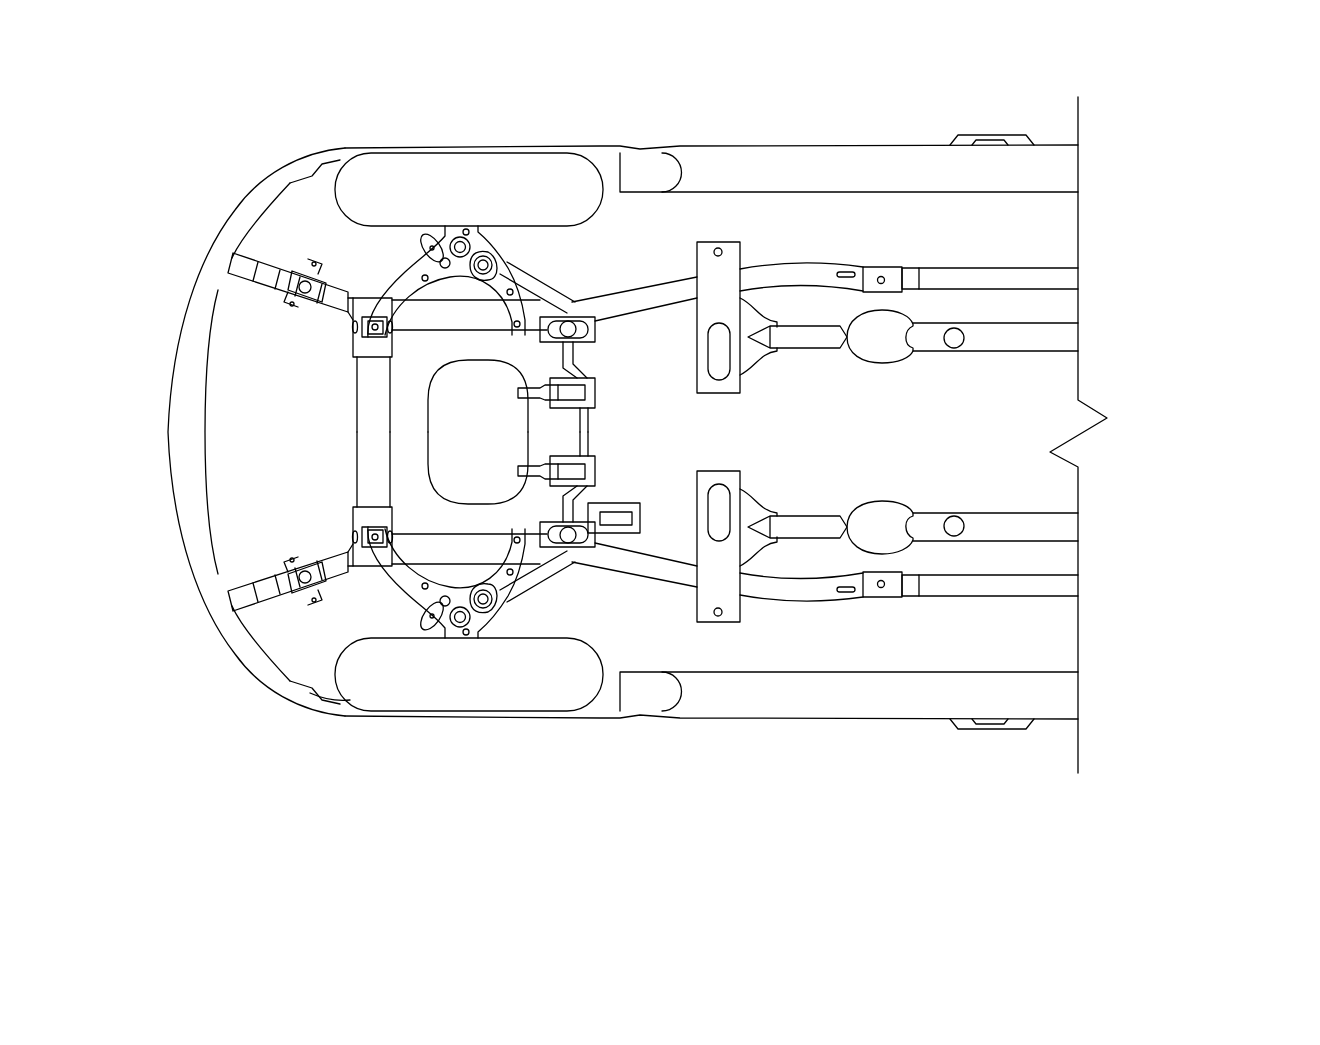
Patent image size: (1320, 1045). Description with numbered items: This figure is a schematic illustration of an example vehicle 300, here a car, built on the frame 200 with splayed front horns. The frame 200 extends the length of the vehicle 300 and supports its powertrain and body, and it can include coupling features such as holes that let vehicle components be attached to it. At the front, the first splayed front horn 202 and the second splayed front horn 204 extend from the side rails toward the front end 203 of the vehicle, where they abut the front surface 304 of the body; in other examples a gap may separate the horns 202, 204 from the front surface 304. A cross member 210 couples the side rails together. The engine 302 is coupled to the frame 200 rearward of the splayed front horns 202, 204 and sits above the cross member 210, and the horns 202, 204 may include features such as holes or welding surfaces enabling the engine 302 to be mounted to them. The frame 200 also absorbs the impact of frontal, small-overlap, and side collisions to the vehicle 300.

The vehicle 300 is at (988, 65).
The vehicle frame 200 is at (236, 190).
The first splayed front horn 202 is at (270, 258).
The second splayed front horn 204 is at (268, 612).
The front end 203 is at (131, 276).
The cross member 210 is at (355, 432).
The engine 302 is at (552, 272).
The front surface 304 is at (170, 500).